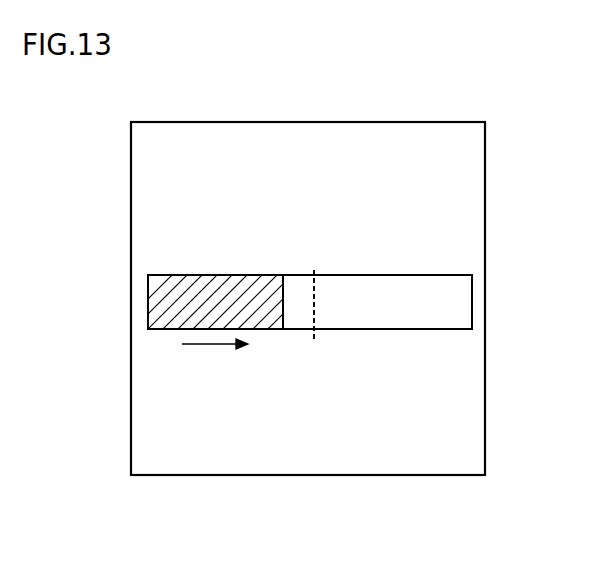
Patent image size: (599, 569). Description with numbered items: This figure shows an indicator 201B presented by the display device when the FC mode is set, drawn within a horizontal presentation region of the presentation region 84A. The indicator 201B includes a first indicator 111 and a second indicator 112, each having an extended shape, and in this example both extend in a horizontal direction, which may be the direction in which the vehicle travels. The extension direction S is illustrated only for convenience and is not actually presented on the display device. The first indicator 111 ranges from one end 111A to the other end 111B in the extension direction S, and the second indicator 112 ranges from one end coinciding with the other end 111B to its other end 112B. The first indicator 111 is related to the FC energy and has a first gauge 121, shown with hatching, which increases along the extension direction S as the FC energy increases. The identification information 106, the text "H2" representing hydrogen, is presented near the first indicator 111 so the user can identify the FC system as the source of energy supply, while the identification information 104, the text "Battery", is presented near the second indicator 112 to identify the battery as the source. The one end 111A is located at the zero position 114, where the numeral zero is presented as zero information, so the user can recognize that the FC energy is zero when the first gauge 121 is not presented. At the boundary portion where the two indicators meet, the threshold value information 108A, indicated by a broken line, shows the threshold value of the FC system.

The presentation region 84A is at (463, 122).
The indicator 201B is at (462, 265).
The first indicator 111 is at (183, 275).
The first gauge 121 is at (258, 310).
The second indicator 112 is at (440, 329).
The identification information 106 is at (214, 240).
The identification information 104 is at (390, 240).
The threshold value information 108A is at (313, 267).
The other end of first indicator 111B is at (314, 307).
The one end of first indicator 111A is at (148, 301).
The other end of second indicator 112B is at (472, 300).
The zero position 114 is at (144, 357).
The extension direction S is at (212, 348).